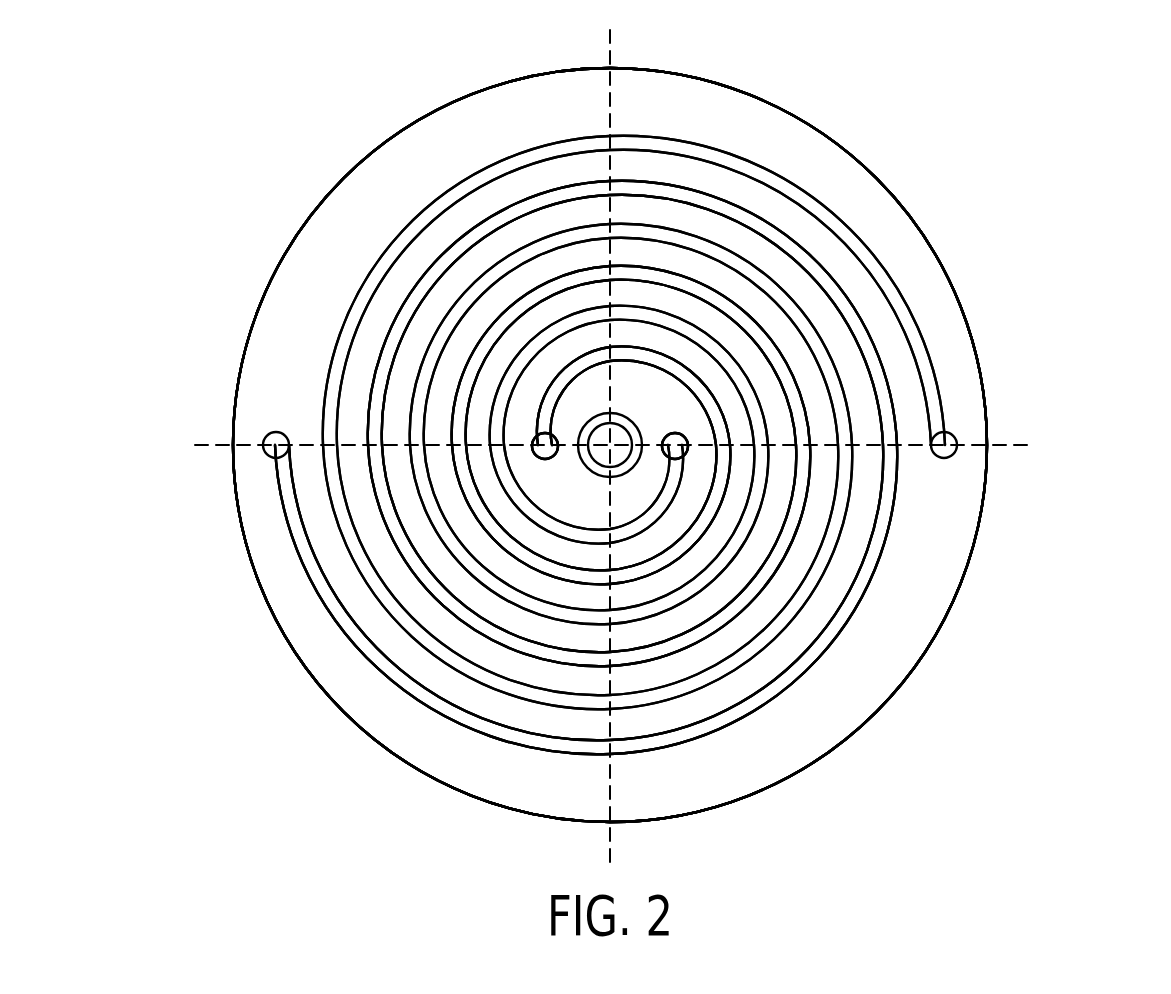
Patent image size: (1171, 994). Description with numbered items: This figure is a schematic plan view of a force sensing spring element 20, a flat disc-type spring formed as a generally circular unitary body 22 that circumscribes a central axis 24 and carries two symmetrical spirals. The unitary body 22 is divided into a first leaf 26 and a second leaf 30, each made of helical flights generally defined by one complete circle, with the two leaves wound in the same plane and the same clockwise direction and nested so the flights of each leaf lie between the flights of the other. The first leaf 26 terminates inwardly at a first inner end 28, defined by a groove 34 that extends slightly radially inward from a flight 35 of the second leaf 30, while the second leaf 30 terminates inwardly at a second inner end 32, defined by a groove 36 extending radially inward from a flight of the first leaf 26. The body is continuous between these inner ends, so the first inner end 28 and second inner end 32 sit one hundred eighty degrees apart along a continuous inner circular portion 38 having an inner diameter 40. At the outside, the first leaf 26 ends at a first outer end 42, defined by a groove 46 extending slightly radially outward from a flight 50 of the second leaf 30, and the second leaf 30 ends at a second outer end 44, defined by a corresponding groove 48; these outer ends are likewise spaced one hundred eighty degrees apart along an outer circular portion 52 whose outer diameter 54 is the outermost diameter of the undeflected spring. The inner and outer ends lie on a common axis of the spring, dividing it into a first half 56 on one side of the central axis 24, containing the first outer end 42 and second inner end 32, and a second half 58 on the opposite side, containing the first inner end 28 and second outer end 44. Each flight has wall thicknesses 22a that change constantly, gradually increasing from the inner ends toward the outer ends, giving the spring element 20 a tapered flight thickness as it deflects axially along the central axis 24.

The force sensing spring element 20 is at (256, 170).
The unitary body 22 is at (287, 368).
The wall thicknesses 22a is at (660, 667).
The central axis 24 is at (608, 728).
The first leaf 26 is at (520, 415).
The first inner end 28 is at (673, 433).
The second leaf 30 is at (685, 510).
The second inner end 32 is at (540, 453).
The groove 34 is at (680, 433).
The flight 35 is at (710, 470).
The groove 36 is at (563, 440).
The inner circular portion 38 is at (596, 390).
The inner diameter 40 is at (600, 461).
The first outer end 42 is at (253, 473).
The second outer end 44 is at (965, 423).
The groove 46 is at (268, 440).
The groove 48 is at (953, 458).
The flight 50 is at (317, 528).
The outer circular portion 52 is at (435, 740).
The outer diameter 54 is at (913, 667).
The first half 56 is at (521, 60).
The second half 58 is at (711, 55).